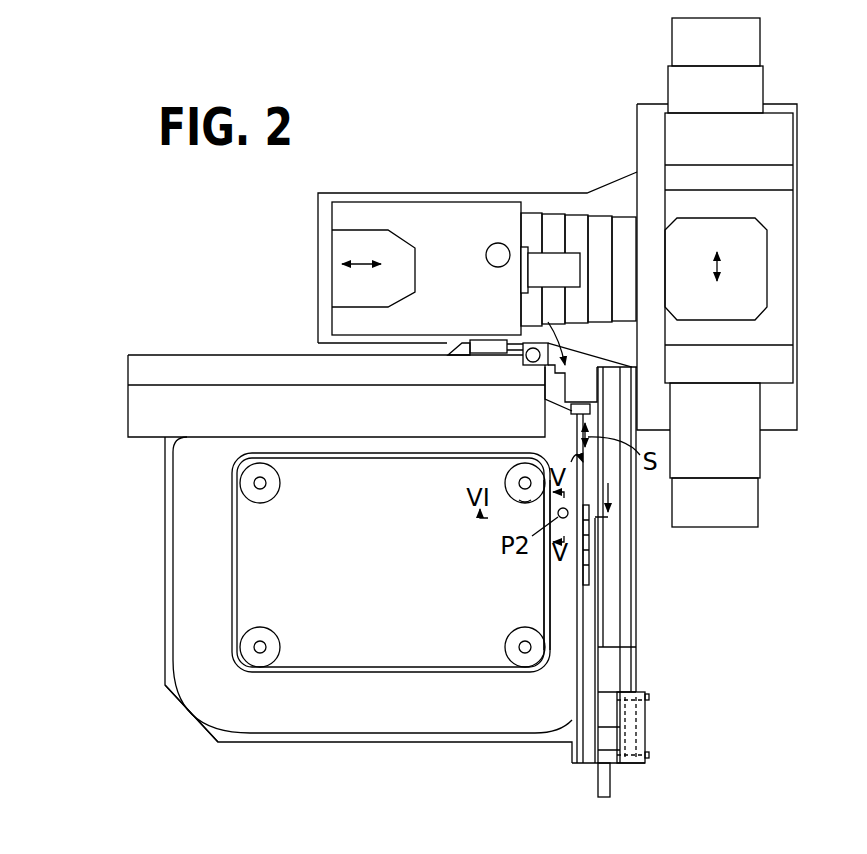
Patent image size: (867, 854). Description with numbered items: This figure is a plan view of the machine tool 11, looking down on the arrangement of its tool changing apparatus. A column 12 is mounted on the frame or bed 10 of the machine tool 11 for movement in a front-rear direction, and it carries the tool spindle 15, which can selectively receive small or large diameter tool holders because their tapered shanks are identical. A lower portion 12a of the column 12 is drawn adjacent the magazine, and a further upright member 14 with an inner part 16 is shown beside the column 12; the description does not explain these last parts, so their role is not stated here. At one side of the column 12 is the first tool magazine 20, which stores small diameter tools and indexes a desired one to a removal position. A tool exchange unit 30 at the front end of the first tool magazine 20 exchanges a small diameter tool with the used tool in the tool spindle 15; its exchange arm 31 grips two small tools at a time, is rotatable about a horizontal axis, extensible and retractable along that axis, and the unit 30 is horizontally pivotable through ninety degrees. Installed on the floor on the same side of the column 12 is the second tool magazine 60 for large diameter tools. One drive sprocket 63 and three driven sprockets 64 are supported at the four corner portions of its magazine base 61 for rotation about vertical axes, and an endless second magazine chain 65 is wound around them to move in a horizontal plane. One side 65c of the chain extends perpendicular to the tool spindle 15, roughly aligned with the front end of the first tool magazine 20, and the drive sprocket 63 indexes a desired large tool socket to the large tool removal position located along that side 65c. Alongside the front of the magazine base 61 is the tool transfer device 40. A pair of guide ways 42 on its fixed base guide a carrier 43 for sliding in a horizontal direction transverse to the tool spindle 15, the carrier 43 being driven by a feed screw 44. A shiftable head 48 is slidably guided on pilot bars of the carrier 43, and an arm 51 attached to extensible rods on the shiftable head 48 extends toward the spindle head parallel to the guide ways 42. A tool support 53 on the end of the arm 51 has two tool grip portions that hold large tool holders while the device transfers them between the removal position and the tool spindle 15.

The frame or bed 10 is at (405, 150).
The machine tool 11 is at (557, 203).
The column 12 is at (446, 212).
The bottom plate of spindle head 12a is at (350, 343).
The column 14 is at (780, 229).
The tool spindle 15 is at (533, 272).
The slide 16 is at (753, 284).
The first tool magazine 20 is at (126, 403).
The tool exchange unit 30 is at (582, 384).
The exchange arm 31 is at (572, 414).
The tool transfer device 40 is at (650, 678).
The guide ways 42 is at (625, 565).
The carrier 43 is at (612, 665).
The feed screw 44 is at (602, 596).
The shiftable head 48 is at (640, 717).
The arm 51 is at (587, 680).
The tool support 53 is at (580, 567).
The second tool magazine 60 is at (163, 585).
The magazine base 61 is at (207, 698).
The drive sprocket 63 is at (525, 498).
The driven sprockets 64 is at (274, 497).
The second magazine chain 65 is at (386, 668).
The one side of the second magazine chain 65c is at (546, 601).